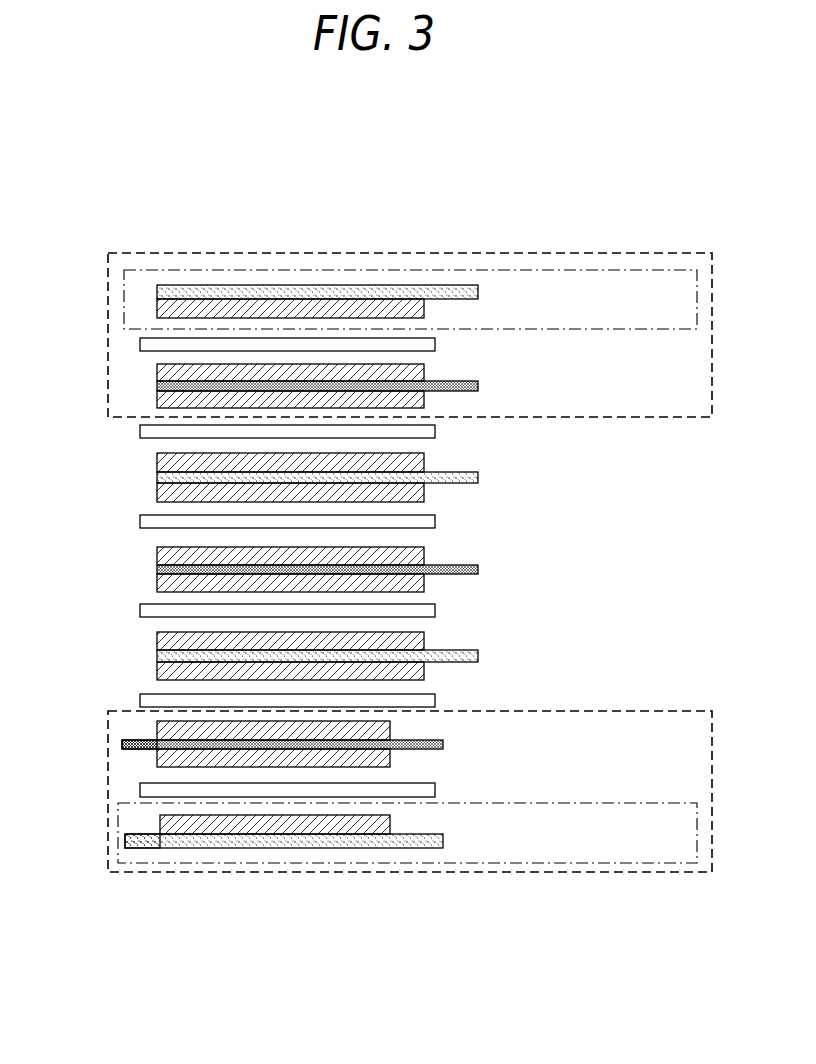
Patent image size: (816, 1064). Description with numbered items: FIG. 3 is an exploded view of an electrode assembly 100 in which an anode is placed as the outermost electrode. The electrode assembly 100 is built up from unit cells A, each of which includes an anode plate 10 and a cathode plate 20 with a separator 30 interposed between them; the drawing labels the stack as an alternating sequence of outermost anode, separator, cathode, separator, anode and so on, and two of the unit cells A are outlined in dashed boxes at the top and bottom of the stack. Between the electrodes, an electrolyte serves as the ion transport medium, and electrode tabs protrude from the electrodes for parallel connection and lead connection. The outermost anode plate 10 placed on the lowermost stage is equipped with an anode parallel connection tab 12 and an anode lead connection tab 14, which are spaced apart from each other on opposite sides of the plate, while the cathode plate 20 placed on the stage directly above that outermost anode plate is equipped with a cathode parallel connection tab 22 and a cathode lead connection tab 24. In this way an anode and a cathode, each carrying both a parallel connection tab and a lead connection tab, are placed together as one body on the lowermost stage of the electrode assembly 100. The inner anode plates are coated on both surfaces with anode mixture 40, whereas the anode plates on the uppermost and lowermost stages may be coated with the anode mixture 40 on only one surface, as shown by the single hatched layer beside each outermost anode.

The electrode assembly 100 is at (203, 154).
The anode plate 10 is at (157, 290).
The anode parallel connection tab 12 is at (463, 288).
The anode lead connection tab 14 is at (140, 840).
The cathode plate 20 is at (157, 385).
The cathode parallel connection tab 22 is at (465, 385).
The cathode lead connection tab 24 is at (134, 743).
The separator 30 is at (140, 344).
The anode mixture 40 is at (157, 462).
The unit cell A is at (650, 252).